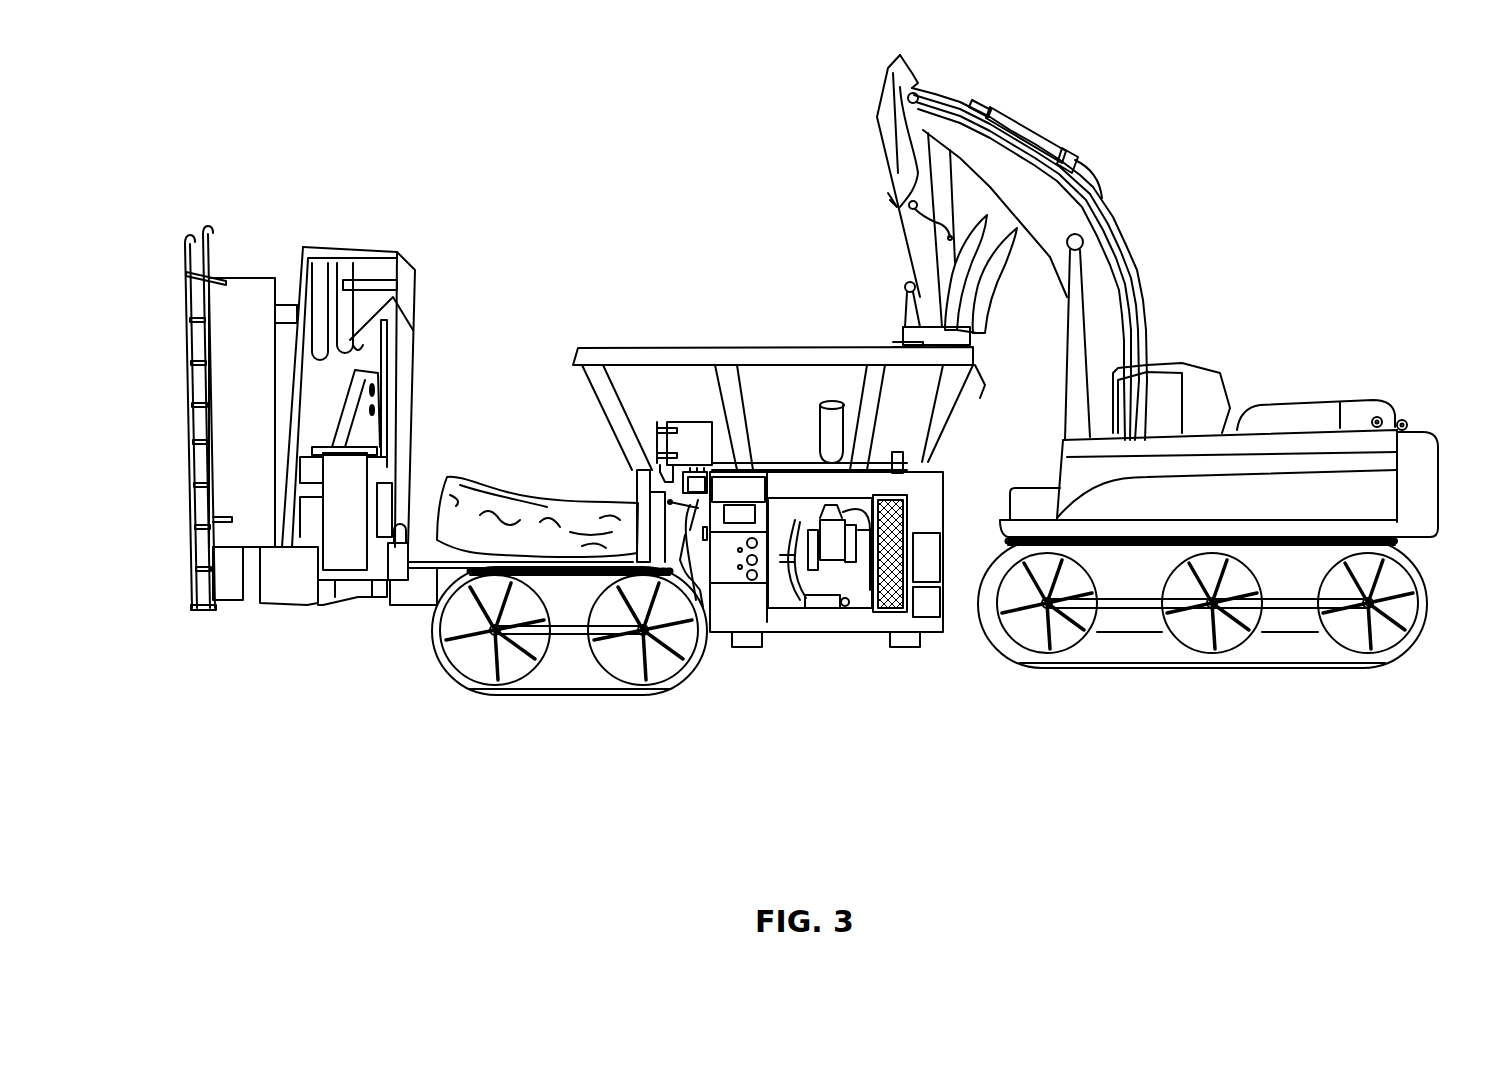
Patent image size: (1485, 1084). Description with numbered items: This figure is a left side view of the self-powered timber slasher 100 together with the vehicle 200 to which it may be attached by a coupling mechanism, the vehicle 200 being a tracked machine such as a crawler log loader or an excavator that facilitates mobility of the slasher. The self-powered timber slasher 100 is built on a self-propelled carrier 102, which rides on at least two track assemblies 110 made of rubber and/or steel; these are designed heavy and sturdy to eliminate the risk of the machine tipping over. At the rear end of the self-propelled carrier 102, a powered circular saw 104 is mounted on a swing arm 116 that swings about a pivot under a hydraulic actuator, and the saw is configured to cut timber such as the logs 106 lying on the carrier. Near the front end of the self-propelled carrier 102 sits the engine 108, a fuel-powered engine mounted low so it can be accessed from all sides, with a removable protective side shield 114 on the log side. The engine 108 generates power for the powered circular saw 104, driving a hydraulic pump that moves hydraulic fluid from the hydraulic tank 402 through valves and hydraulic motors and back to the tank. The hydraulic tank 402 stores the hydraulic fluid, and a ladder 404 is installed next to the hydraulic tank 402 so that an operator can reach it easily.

The self-powered timber slasher 100 is at (665, 200).
The self-propelled carrier 102 is at (420, 578).
The powered circular saw 104 is at (377, 387).
The logs 106 is at (472, 490).
The engine 108 is at (810, 582).
The track assemblies 110 is at (553, 573).
The removable protective side shield 114 is at (663, 358).
The swing arm 116 is at (383, 420).
The vehicle 200 is at (1217, 308).
The hydraulic tank 402 is at (263, 273).
The ladder 404 is at (186, 270).